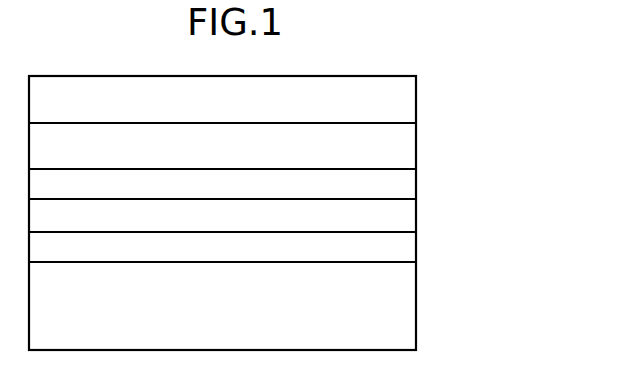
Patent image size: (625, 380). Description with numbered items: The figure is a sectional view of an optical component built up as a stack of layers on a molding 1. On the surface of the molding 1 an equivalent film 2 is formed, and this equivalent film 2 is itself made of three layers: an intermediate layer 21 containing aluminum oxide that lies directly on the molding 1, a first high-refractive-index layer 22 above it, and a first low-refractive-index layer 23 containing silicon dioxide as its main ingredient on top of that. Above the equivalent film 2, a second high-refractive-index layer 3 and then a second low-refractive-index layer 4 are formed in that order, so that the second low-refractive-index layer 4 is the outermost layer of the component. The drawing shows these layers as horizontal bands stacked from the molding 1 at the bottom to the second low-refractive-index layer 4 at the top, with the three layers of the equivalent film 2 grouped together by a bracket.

The molding 1 is at (400, 308).
The equivalent film 2 is at (503, 175).
The intermediate layer 21 is at (398, 249).
The first high-refractive-index layer 22 is at (402, 219).
The first low-refractive-index layer 23 is at (399, 189).
The second high-refractive-index layer 3 is at (397, 155).
The second low-refractive-index layer 4 is at (397, 103).